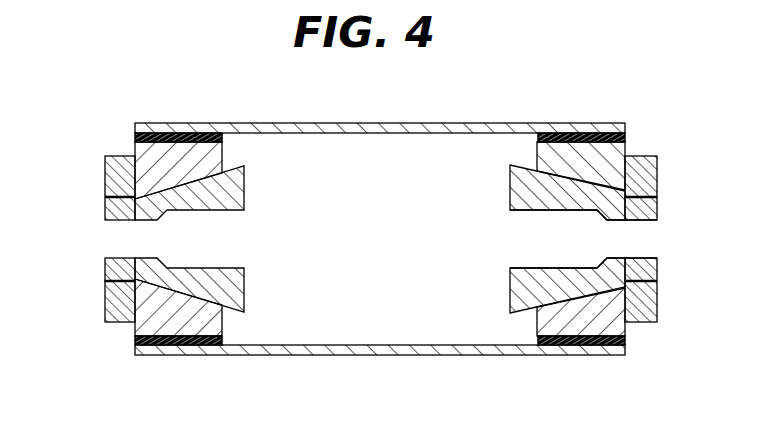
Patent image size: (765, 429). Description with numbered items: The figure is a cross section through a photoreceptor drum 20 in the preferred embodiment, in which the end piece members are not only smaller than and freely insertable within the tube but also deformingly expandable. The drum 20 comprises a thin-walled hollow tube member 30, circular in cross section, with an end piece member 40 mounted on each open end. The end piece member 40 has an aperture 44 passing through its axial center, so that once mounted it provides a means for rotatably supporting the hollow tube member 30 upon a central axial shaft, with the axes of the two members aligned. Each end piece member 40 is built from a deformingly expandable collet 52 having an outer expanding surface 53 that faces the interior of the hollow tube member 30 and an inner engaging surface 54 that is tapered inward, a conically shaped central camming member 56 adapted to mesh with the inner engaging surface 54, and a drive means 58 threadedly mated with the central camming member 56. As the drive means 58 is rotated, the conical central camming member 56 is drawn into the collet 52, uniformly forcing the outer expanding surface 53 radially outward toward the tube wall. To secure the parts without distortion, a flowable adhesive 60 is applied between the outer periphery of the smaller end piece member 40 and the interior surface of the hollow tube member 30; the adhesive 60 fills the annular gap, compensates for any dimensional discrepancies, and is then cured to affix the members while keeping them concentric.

The photoreceptor drum 20 is at (156, 100).
The hollow tube member 30 is at (560, 123).
The end piece member 40 is at (678, 186).
The aperture 44 is at (658, 240).
The expandable collet 52 is at (134, 328).
The outer expanding surface 53 is at (133, 137).
The inner engaging surface 54 is at (178, 178).
The central camming member 56 is at (105, 266).
The drive means 58 is at (105, 302).
The flowable adhesive 60 is at (627, 337).